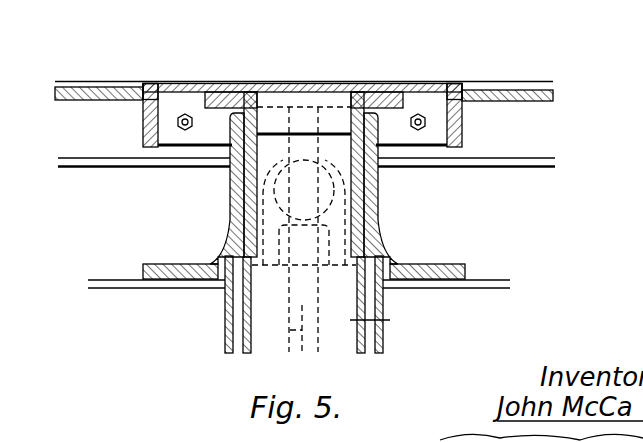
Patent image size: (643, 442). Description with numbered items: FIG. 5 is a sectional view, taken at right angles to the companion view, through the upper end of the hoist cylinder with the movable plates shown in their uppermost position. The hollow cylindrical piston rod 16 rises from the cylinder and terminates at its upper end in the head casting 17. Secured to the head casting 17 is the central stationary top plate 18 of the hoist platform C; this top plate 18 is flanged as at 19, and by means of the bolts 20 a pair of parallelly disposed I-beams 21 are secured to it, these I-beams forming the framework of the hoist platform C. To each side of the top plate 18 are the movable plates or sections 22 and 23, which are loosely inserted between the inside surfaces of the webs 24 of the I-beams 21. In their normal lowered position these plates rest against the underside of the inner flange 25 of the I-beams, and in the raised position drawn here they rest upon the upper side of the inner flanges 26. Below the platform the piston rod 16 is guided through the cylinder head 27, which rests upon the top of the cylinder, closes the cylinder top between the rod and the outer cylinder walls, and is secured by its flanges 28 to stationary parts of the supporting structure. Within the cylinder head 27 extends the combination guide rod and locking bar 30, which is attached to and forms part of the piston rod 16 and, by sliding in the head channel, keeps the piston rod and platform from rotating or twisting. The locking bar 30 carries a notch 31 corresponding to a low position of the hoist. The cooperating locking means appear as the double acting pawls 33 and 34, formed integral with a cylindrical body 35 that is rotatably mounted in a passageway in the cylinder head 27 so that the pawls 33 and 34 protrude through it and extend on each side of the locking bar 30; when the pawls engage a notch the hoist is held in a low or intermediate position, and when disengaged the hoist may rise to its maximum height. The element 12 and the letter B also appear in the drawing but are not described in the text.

The hoist platform C is at (198, 82).
The king pin tube B is at (390, 320).
The hub housing 12 is at (356, 182).
The piston rod 16 is at (252, 333).
The head casting 17 is at (383, 96).
The top plate 18 is at (421, 84).
The flange 19 is at (150, 124).
The bolts 20 is at (186, 131).
The I-beams 21 is at (488, 163).
The movable plate 22 is at (85, 101).
The movable plate 23 is at (533, 101).
The webs 24 is at (108, 143).
The inner flange 25 is at (143, 82).
The inner flanges 26 is at (127, 155).
The cylinder head 27 is at (233, 212).
The flanges 28 is at (160, 264).
The locking bar 30 is at (302, 305).
The notch 31 is at (302, 323).
The double acting pawl 33 is at (283, 183).
The double acting pawl 34 is at (322, 184).
The cylindrical body 35 is at (315, 218).